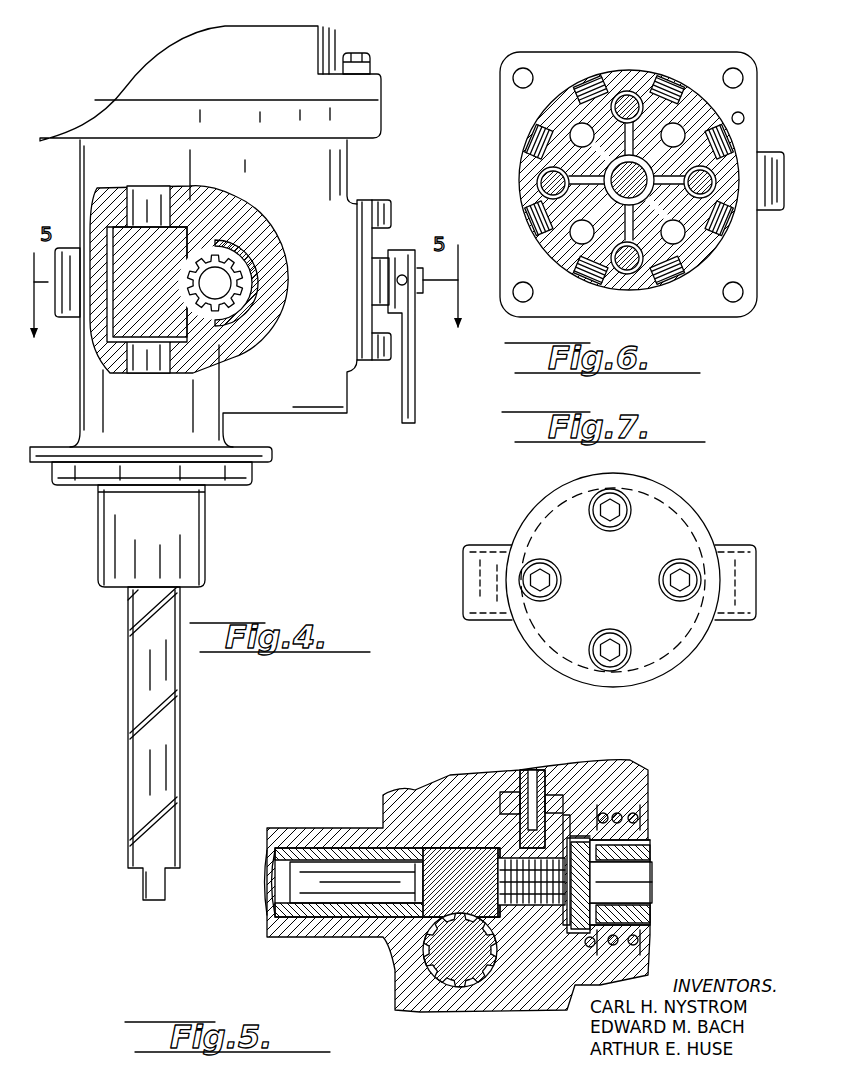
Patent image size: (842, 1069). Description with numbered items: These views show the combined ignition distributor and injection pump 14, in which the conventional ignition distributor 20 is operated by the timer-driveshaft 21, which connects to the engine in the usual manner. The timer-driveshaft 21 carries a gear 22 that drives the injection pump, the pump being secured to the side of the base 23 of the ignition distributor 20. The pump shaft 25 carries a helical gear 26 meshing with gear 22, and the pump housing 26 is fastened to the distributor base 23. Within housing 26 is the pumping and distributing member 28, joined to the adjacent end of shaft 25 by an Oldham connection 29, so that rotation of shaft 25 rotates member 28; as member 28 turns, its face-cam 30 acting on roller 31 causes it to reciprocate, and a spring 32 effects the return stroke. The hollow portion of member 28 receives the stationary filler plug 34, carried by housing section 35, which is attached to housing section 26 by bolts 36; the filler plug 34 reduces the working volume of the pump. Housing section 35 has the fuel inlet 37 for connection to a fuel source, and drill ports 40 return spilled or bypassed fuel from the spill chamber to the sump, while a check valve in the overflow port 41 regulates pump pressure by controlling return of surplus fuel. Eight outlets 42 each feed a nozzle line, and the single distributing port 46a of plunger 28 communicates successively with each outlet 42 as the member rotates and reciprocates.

In FIG. 4, the combined ignition distributor and injection pump 14 is at (303, 441).
In FIG. 4, the ignition distributor 20 is at (348, 45).
In FIG. 4, the timer-driveshaft 21 is at (140, 601).
In FIG. 5, the timer-driveshaft 21 is at (436, 960).
In FIG. 4, the gear 22 is at (222, 210).
In FIG. 5, the gear 22 is at (430, 948).
In FIG. 4, the base 23 is at (335, 204).
In FIG. 4, the shaft 25 is at (218, 282).
In FIG. 5, the shaft 25 is at (318, 878).
In FIG. 4, the pump housing 26 is at (249, 296).
In FIG. 6, the pump housing 26 is at (550, 117).
In FIG. 5, the pump housing 26 is at (443, 862).
In FIG. 6, the pumping and distributing member 28 is at (737, 208).
In FIG. 5, the pumping and distributing member 28 is at (652, 858).
In FIG. 5, the Oldham connection 29 is at (598, 882).
In FIG. 5, the face-cam 30 is at (580, 802).
In FIG. 5, the roller 31 is at (538, 802).
In FIG. 5, the spring 32 is at (640, 815).
In FIG. 6, the stationary filler plug 34 is at (630, 170).
In FIG. 7, the housing section 35 is at (665, 510).
In FIG. 6, the bolts 36 is at (627, 94).
In FIG. 7, the bolts 36 is at (610, 630).
In FIG. 7, the fuel inlet 37 is at (484, 562).
In FIG. 6, the drill ports 40 is at (550, 116).
In FIG. 7, the overflow port 41 is at (735, 560).
In FIG. 6, the outlets 42 is at (683, 93).
In FIG. 6, the distributing port 46a is at (737, 116).